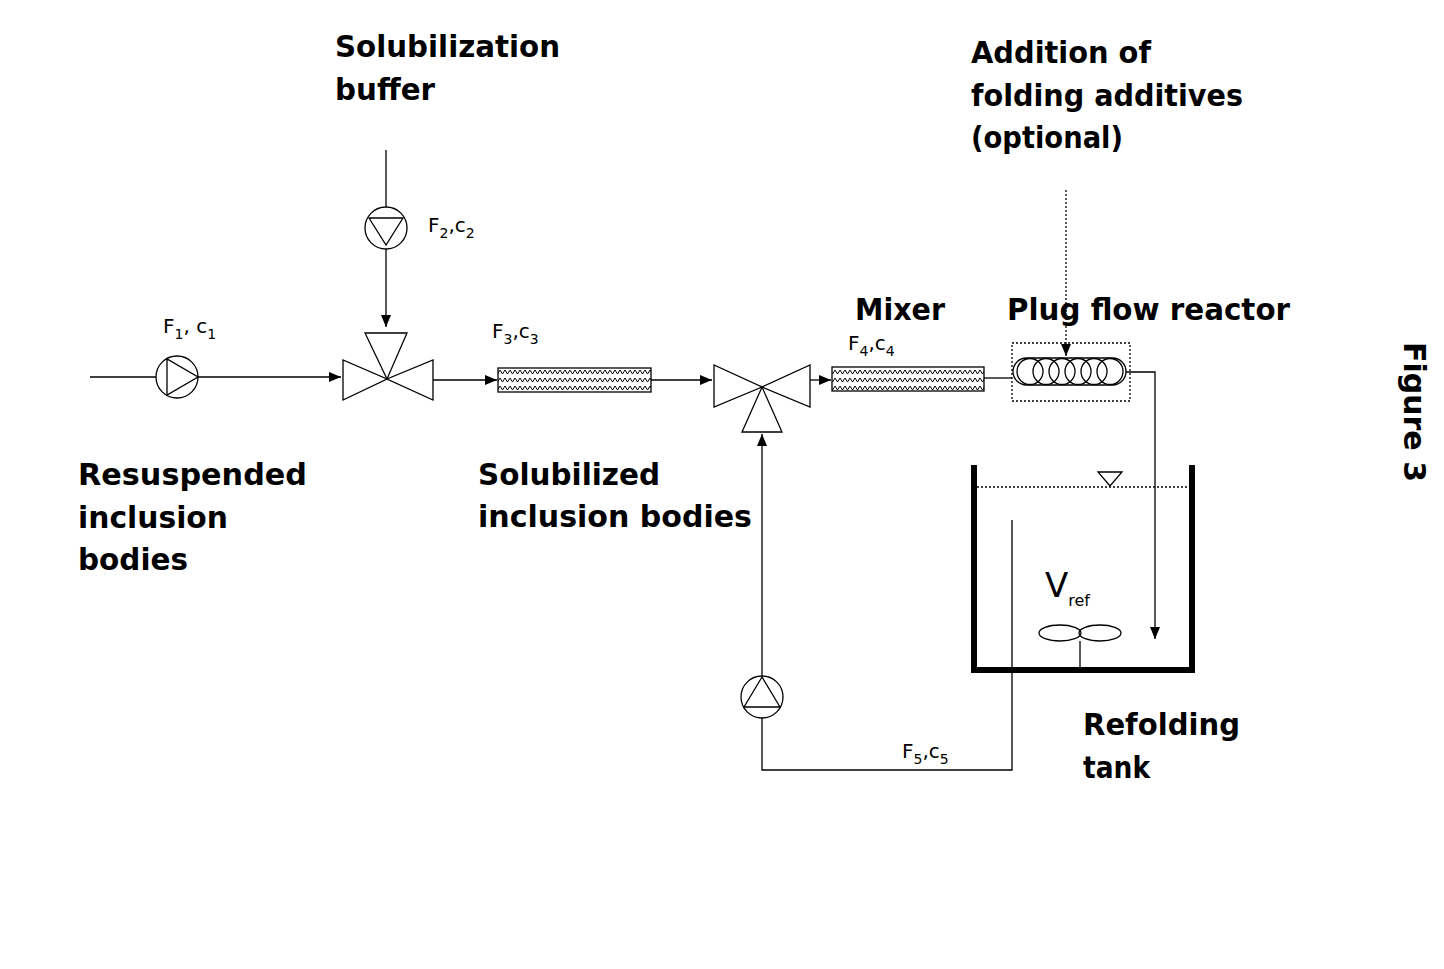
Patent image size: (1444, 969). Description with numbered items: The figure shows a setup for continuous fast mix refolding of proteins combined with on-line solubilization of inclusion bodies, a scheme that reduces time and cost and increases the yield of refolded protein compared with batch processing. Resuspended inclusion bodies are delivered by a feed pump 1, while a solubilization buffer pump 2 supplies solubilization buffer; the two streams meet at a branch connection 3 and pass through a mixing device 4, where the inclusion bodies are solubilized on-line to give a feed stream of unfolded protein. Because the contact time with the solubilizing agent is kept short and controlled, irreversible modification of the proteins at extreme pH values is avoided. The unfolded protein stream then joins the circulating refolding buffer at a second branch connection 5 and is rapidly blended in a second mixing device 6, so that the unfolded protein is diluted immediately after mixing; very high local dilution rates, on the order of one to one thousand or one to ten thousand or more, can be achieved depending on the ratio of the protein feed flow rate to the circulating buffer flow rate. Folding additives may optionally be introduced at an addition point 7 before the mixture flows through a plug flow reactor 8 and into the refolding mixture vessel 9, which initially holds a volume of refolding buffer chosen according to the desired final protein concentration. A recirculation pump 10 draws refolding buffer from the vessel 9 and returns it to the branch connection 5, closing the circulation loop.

The feed pump 1 is at (179, 394).
The solubilization buffer pump 2 is at (370, 228).
The branch connection 3 is at (388, 382).
The mixing device 4 is at (574, 400).
The branch connection 5 is at (762, 380).
The mixing device 6 is at (908, 399).
The addition of folding additives 7 is at (1046, 273).
The plug flow reactor 8 is at (1071, 387).
The refolding mixture vessel 9 is at (1083, 567).
The recirculation pump 10 is at (784, 697).